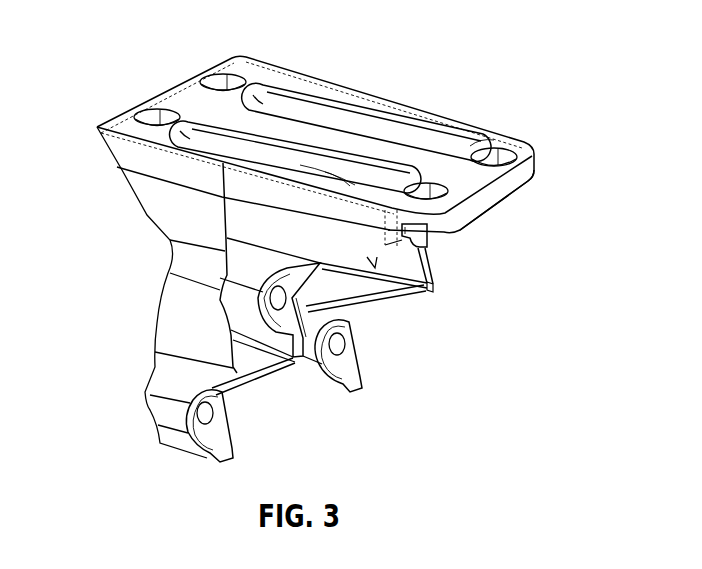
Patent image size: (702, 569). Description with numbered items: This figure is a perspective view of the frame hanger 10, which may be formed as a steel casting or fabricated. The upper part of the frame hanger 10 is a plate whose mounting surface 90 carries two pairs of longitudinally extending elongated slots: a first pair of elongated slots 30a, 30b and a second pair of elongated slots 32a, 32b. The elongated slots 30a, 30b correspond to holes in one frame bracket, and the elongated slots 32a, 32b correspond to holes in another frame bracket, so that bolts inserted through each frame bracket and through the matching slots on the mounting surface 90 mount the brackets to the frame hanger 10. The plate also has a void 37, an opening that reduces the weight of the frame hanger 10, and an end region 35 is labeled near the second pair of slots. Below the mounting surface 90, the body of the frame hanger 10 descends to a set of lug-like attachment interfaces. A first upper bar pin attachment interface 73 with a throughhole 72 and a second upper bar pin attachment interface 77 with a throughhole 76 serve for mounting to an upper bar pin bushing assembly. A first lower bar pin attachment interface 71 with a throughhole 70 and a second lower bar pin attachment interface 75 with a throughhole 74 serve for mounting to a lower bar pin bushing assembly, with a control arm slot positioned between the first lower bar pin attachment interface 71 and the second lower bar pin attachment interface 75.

The frame hanger 10 is at (140, 230).
The elongated slot 30a is at (155, 115).
The elongated slot 30b is at (221, 80).
The elongated slot 32a is at (437, 192).
The elongated slot 32b is at (496, 158).
The plate end portion 35 is at (508, 190).
The void 37 is at (324, 118).
The mounting surface 90 is at (487, 138).
The throughhole 70 is at (207, 413).
The first lower bar pin attachment interface 71 is at (215, 438).
The throughhole 72 is at (283, 297).
The first upper bar pin attachment interface 73 is at (283, 320).
The throughhole 74 is at (340, 343).
The second lower bar pin attachment interface 75 is at (345, 373).
The throughhole 76 is at (412, 230).
The second upper bar pin attachment interface 77 is at (428, 268).